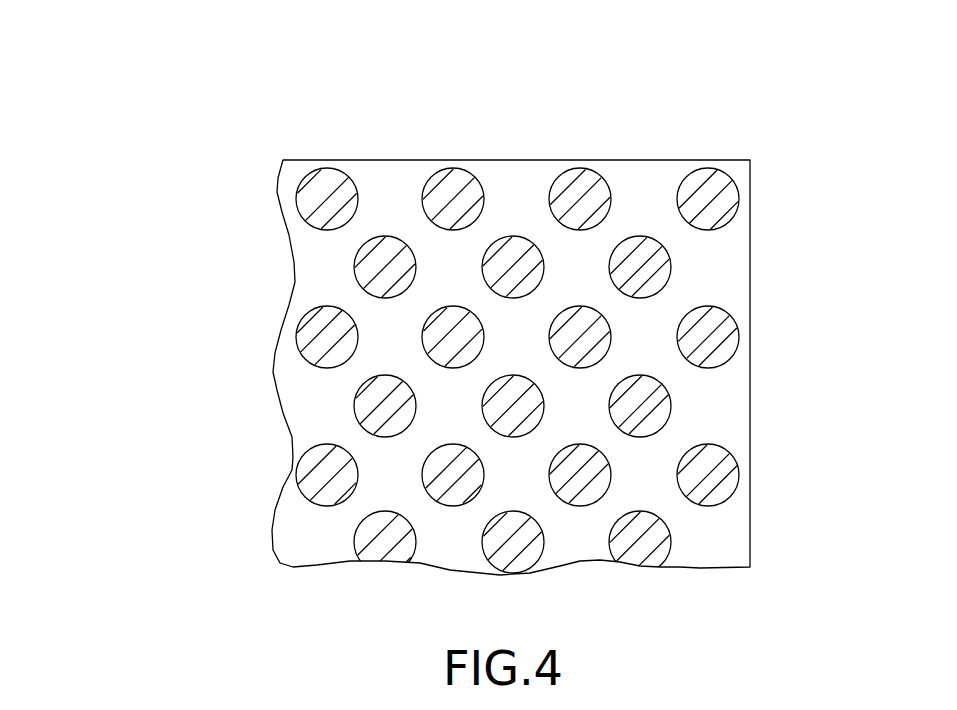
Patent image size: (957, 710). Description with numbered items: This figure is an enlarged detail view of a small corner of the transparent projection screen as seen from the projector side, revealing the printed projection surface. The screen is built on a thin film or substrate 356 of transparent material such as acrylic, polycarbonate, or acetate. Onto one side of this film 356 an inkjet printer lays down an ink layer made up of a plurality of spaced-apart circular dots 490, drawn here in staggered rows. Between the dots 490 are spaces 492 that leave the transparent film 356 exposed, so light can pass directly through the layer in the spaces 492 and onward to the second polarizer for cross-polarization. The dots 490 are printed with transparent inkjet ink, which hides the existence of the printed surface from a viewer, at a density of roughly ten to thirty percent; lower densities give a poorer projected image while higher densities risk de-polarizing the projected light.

The thin film or substrate 356 is at (775, 346).
The circular dots 490 is at (357, 407).
The spaces 492 is at (318, 276).